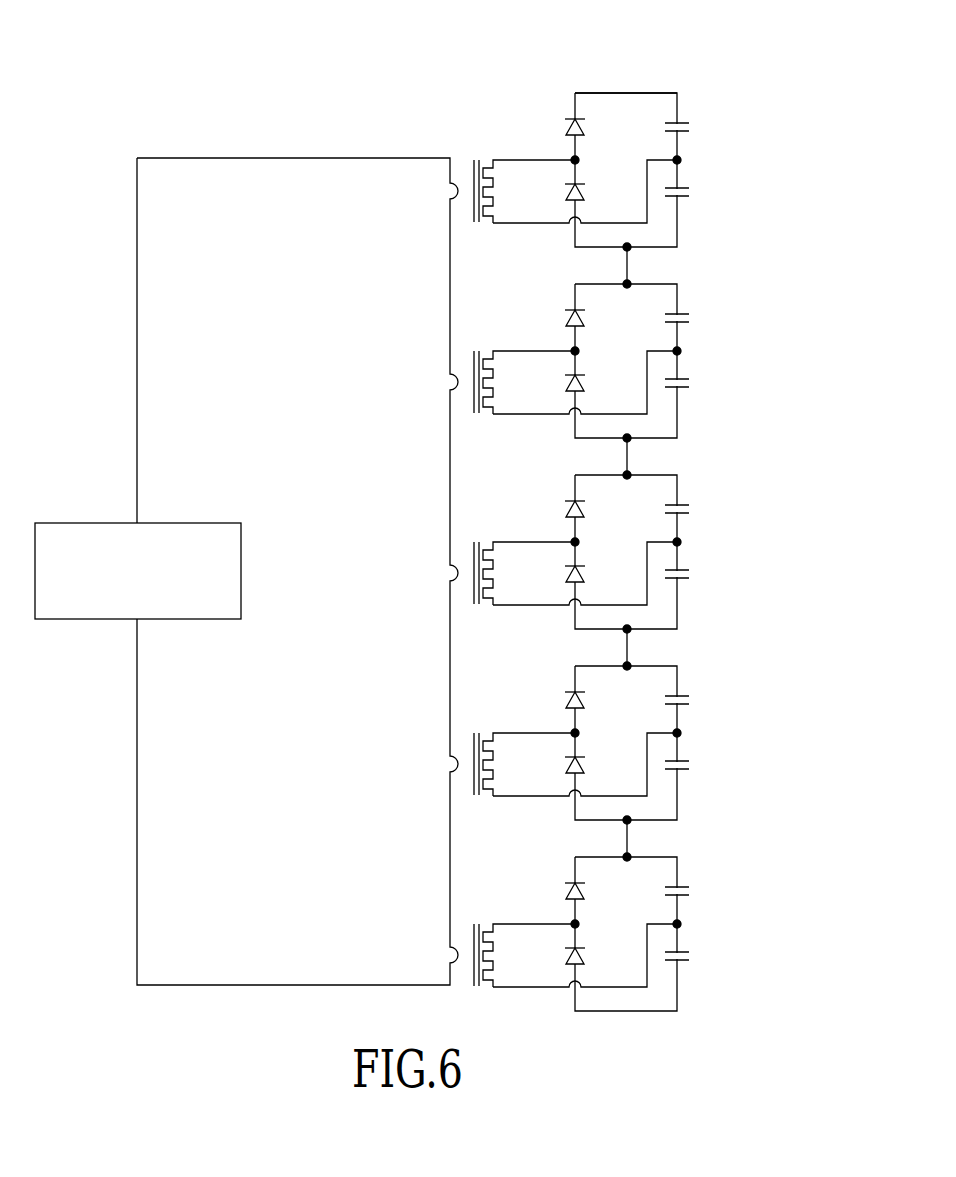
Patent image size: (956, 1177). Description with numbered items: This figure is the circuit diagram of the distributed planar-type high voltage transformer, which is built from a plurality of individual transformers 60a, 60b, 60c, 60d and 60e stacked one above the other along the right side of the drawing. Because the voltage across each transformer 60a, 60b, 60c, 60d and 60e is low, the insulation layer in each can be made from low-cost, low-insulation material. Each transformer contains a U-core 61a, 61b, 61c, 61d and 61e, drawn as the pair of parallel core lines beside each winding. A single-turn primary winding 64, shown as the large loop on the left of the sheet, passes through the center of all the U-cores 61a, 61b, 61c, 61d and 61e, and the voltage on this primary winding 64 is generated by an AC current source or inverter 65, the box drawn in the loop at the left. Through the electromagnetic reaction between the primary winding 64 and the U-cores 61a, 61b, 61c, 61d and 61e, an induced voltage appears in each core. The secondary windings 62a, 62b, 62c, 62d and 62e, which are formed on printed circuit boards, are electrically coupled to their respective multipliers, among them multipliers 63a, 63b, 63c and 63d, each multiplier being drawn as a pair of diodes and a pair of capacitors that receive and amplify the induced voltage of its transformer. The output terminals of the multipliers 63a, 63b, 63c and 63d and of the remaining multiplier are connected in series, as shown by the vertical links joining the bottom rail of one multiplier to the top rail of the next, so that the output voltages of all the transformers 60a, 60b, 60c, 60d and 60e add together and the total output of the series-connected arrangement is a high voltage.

The transformer 60a is at (626, 154).
The transformer 60b is at (627, 345).
The transformer 60c is at (626, 536).
The transformer 60d is at (627, 727).
The transformer 60e is at (626, 916).
The U-core 61a is at (478, 142).
The U-core 61b is at (478, 333).
The U-core 61c is at (478, 524).
The U-core 61d is at (478, 715).
The U-core 61e is at (478, 906).
The secondary winding 62a is at (541, 140).
The secondary winding 62b is at (541, 331).
The secondary winding 62c is at (541, 522).
The secondary winding 62d is at (541, 713).
The secondary winding 62e is at (541, 904).
The multiplier 63a is at (657, 84).
The multiplier 63b is at (666, 278).
The multiplier 63c is at (666, 660).
The multiplier 63d is at (666, 851).
The primary winding 64 is at (366, 145).
The inverter 65 is at (213, 505).